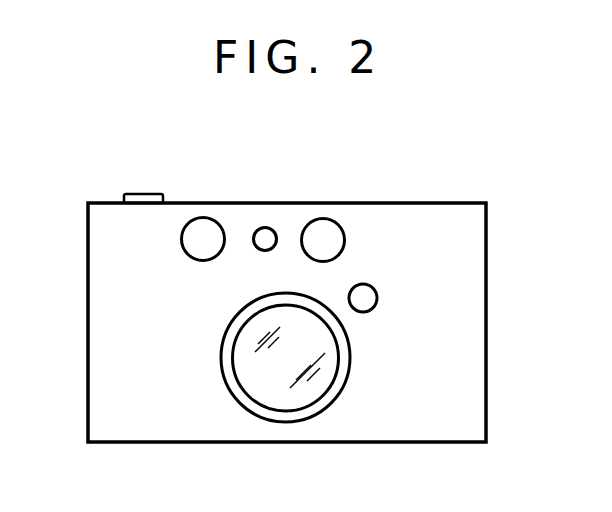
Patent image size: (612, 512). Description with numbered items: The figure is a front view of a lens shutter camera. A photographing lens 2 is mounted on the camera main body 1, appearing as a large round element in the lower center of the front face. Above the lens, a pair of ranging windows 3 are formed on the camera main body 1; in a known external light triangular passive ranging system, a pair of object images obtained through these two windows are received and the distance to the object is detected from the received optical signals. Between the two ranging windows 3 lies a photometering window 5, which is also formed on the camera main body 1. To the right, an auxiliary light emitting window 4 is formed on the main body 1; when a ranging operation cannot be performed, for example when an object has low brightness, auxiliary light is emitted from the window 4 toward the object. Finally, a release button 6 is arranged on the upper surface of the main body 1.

The camera main body 1 is at (100, 405).
The photographing lens 2 is at (287, 400).
The ranging windows 3 is at (204, 230).
The auxiliary light emitting window 4 is at (375, 287).
The photometering window 5 is at (266, 227).
The release button 6 is at (142, 194).